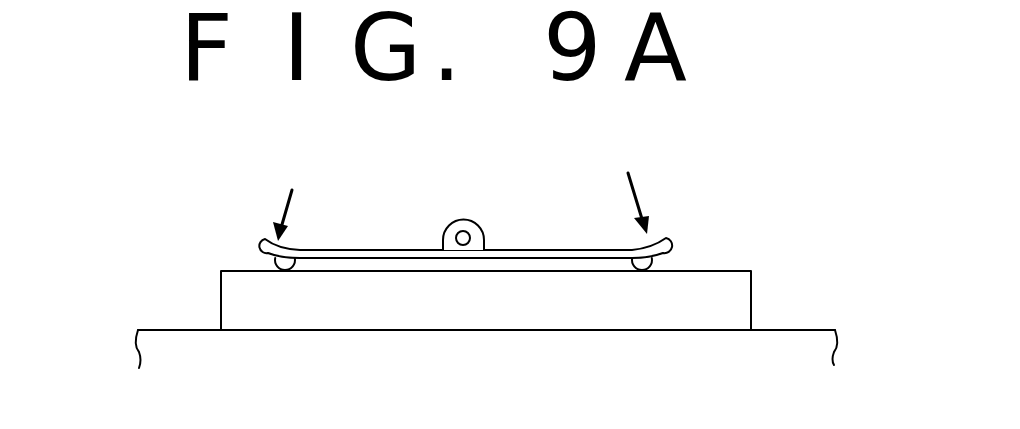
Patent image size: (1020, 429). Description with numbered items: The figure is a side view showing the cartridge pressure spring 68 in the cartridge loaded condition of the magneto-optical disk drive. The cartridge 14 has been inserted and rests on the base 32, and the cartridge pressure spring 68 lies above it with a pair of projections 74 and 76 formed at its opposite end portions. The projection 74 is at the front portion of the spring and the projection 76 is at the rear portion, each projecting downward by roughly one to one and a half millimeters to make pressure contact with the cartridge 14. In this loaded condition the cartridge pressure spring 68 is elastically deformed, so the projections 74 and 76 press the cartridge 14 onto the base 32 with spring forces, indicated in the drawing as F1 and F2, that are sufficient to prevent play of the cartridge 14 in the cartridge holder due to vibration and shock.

The cartridge 14 is at (455, 318).
The base 32 is at (808, 329).
The cartridge pressure spring 68 is at (530, 250).
The projection 74 is at (656, 266).
The projection 76 is at (276, 263).
The force F1 is at (291, 196).
The force F2 is at (630, 188).